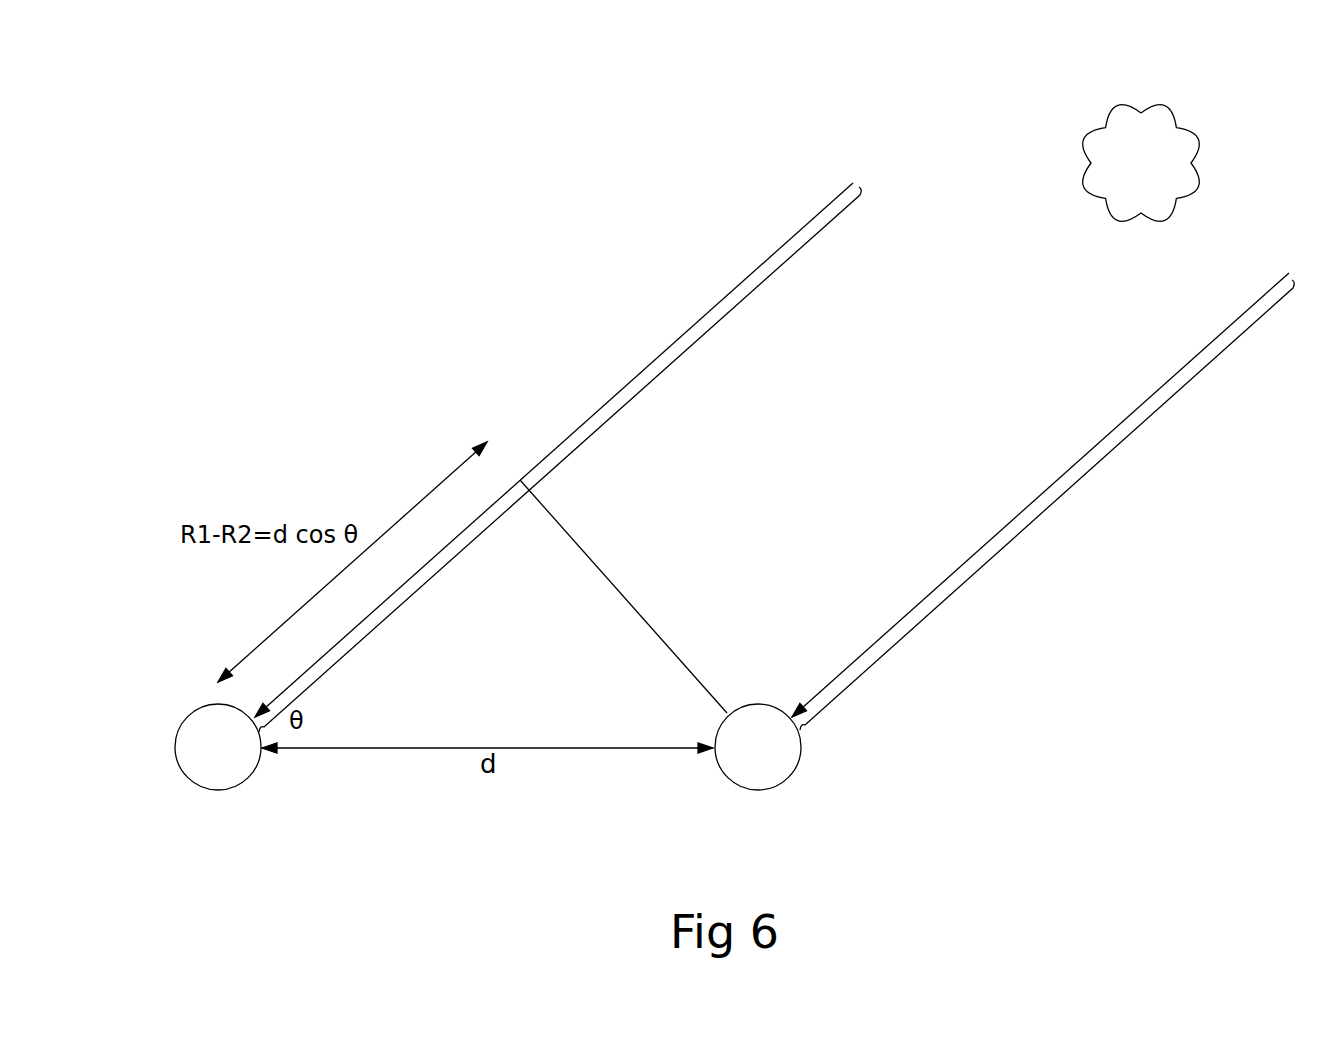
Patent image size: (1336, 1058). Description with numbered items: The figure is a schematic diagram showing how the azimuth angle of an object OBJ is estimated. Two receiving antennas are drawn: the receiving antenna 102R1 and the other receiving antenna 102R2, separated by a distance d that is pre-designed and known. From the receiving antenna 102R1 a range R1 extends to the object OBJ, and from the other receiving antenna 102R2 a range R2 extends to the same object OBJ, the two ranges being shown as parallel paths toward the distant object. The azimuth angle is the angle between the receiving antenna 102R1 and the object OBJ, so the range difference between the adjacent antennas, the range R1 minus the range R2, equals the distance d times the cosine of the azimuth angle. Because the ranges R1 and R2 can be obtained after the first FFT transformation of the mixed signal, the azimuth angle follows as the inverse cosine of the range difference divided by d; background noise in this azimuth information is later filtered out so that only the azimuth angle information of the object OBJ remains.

The receiving antenna 102R1 is at (218, 790).
The other receiving antenna 102R2 is at (758, 790).
The range R1 is at (560, 462).
The range R2 is at (1045, 511).
The object OBJ is at (1126, 102).